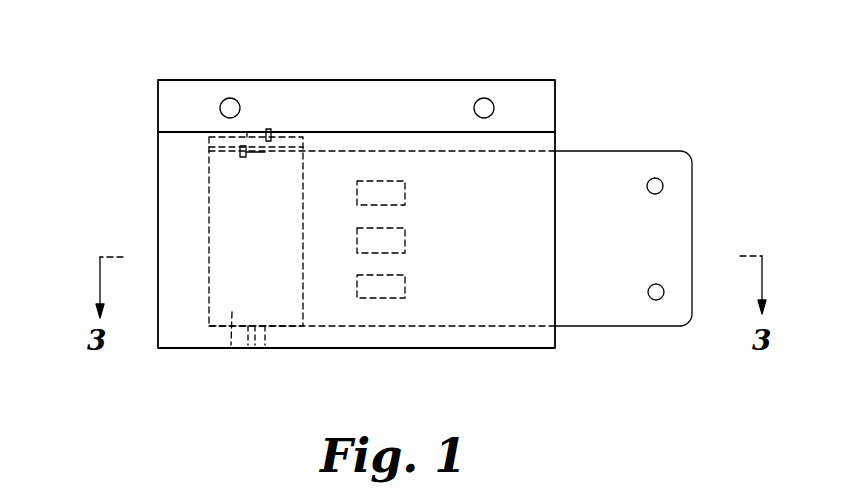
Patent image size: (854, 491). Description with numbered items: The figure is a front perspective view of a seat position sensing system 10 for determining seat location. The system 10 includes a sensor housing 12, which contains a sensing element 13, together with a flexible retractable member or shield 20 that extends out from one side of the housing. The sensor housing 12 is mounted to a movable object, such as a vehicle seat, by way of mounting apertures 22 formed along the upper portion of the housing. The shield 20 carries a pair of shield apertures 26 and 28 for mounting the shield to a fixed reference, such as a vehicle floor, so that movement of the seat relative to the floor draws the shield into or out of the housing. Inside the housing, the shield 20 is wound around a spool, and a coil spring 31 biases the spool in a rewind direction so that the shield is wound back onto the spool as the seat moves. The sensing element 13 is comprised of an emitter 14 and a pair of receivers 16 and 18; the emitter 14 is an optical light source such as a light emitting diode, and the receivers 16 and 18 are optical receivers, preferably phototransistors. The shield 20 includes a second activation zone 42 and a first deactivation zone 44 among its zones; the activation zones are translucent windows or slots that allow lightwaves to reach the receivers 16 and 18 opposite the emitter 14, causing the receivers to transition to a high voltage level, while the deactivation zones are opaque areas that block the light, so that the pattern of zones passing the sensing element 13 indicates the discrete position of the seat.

The seat position sensing system 10 is at (158, 88).
The sensor housing 12 is at (172, 183).
The sensing element 13 is at (397, 310).
The emitter 14 is at (401, 240).
The receiver 16 is at (401, 193).
The receiver 18 is at (401, 287).
The flexible retractable member or shield 20 is at (615, 158).
The mounting aperture 22 is at (230, 107).
The shield aperture 26 is at (660, 186).
The shield aperture 28 is at (656, 292).
The coil spring 31 is at (209, 138).
The second activation zone 42 is at (231, 345).
The first deactivation zone 44 is at (255, 345).